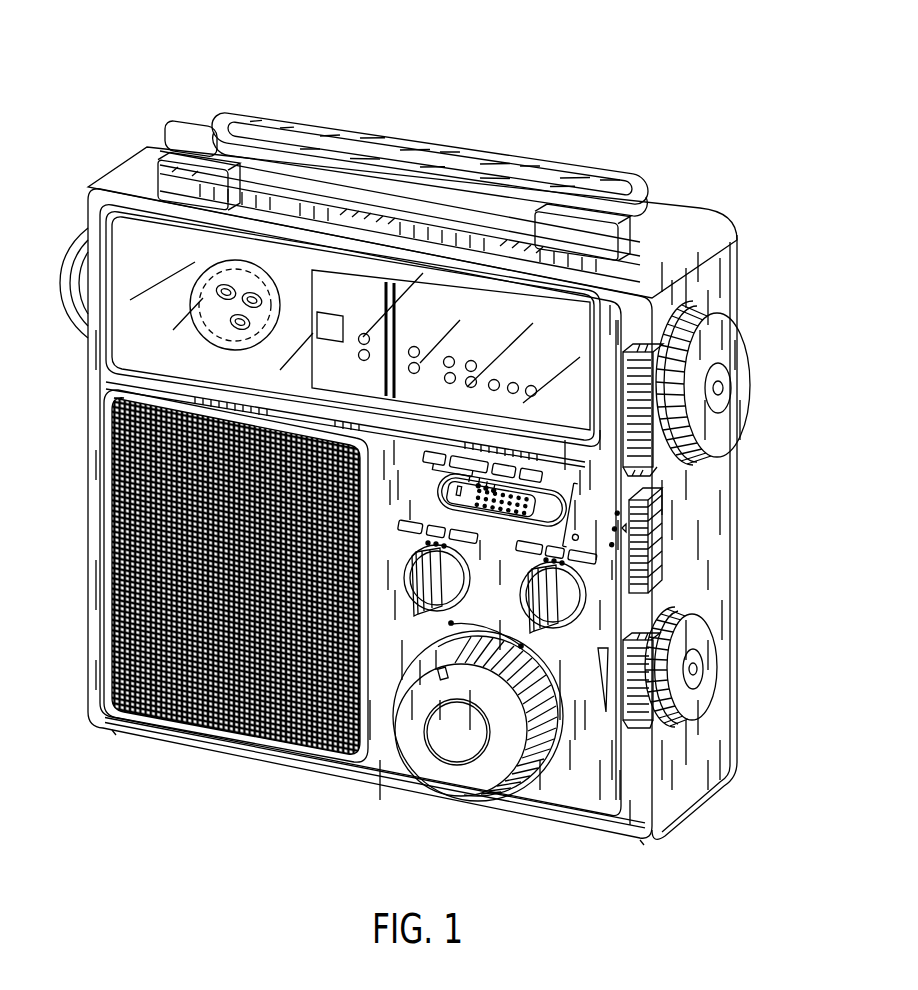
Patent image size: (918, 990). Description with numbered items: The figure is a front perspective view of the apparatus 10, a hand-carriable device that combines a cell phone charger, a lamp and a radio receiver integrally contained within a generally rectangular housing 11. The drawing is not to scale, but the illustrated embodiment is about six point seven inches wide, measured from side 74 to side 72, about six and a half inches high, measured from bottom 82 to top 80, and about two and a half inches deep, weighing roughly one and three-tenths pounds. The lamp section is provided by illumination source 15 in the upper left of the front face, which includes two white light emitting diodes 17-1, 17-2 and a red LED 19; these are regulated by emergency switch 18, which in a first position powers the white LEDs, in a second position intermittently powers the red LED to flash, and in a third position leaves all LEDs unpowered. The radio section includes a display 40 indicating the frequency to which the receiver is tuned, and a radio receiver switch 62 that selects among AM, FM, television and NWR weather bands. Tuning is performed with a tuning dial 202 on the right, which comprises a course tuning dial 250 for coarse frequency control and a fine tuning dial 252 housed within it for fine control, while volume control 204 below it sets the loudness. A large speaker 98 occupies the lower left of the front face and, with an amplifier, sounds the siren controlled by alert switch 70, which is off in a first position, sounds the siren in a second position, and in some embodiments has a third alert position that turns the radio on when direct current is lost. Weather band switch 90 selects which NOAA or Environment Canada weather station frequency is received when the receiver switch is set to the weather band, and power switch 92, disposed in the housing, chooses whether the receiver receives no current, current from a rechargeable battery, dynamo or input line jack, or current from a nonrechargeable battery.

The apparatus 10 is at (123, 37).
The housing 11 is at (88, 190).
The illumination source 15 is at (207, 333).
The white light emitting diode 17-1 is at (250, 275).
The white light emitting diode 17-2 is at (285, 290).
The emergency switch 18 is at (413, 610).
The red LED 19 is at (113, 383).
The display 40 is at (440, 290).
The radio receiver switch 62 is at (567, 484).
The alert switch 70 is at (547, 600).
The side 72 is at (677, 760).
The side 74 is at (95, 585).
The top 80 is at (660, 257).
The bottom 82 is at (613, 837).
The weather band switch 90 is at (492, 790).
The power switch 92 is at (665, 540).
The speaker 98 is at (197, 687).
The tuning dial 202 is at (722, 388).
The volume control 204 is at (697, 640).
The course tuning dial 250 is at (690, 315).
The fine tuning dial 252 is at (733, 422).